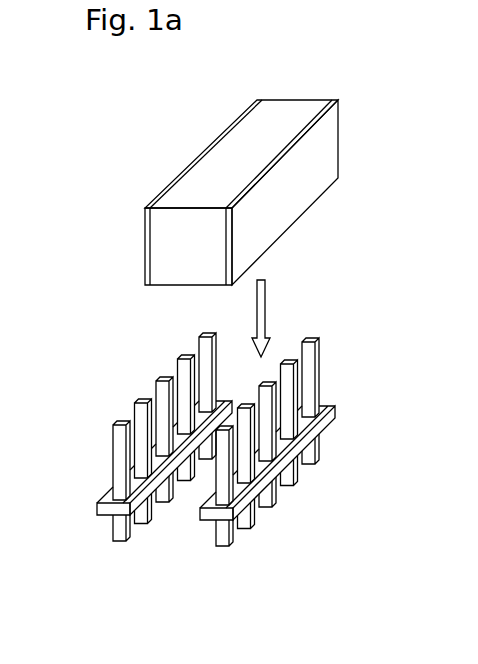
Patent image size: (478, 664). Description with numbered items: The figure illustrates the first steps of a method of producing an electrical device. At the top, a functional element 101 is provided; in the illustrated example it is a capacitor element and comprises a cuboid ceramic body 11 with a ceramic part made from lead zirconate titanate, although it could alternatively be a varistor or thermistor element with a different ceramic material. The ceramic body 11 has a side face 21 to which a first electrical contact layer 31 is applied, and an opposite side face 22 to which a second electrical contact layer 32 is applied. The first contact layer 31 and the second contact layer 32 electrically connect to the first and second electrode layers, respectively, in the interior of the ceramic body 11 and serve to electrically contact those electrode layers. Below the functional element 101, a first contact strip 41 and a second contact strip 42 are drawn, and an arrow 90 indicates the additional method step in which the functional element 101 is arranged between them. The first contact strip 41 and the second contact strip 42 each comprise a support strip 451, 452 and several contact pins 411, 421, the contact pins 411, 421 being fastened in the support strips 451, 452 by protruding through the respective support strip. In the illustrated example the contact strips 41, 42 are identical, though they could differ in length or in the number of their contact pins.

The functional element 101 is at (250, 180).
The ceramic body 11 is at (300, 112).
The side face 21 is at (222, 133).
The side face 22 is at (285, 150).
The first electrical contact layer 31 is at (144, 236).
The second electrical contact layer 32 is at (270, 217).
The arrow 90 is at (265, 305).
The first contact strip 41 is at (126, 471).
The second contact strip 42 is at (314, 478).
The support strip 451 is at (97, 511).
The support strip 452 is at (262, 474).
The contact pins 411 is at (124, 531).
The contact pins 421 is at (227, 533).